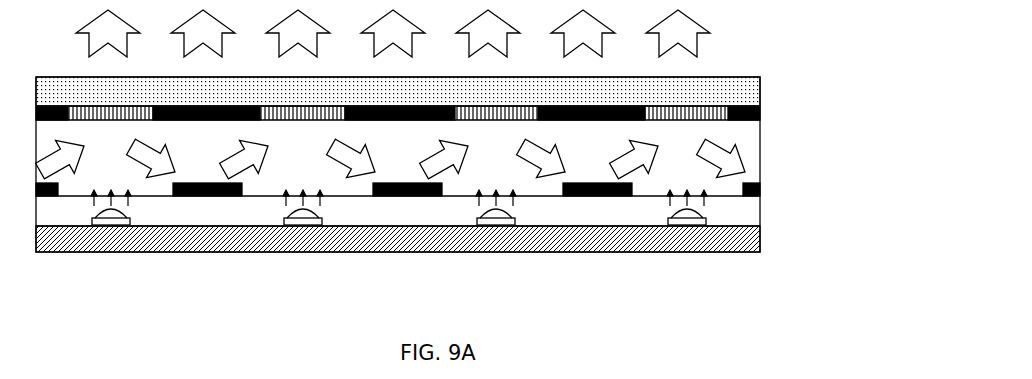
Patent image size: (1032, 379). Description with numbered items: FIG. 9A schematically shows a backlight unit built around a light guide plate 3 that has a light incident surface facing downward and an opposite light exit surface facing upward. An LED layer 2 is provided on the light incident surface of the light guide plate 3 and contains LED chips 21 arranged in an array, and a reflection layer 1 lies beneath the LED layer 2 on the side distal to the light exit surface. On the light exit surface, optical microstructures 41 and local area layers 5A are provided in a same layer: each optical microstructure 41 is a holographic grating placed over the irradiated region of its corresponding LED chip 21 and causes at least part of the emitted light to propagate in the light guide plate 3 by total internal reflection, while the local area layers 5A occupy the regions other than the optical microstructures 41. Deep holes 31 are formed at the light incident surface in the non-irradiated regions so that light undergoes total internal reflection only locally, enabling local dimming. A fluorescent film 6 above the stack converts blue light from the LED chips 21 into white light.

The reflection layer 1 is at (748, 242).
The LED layer 2 is at (717, 213).
The LED chip 21 is at (687, 222).
The light guide plate 3 is at (444, 258).
The deep hole 31 is at (203, 196).
The optical microstructure 41 is at (703, 120).
The local area layer 5A is at (753, 119).
The fluorescent film 6 is at (747, 99).